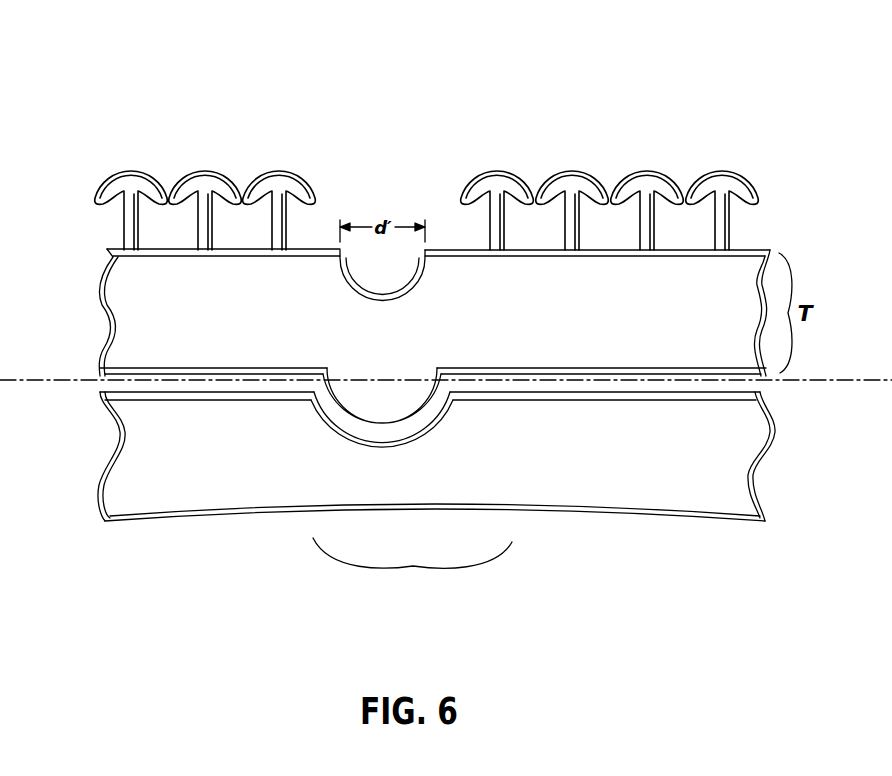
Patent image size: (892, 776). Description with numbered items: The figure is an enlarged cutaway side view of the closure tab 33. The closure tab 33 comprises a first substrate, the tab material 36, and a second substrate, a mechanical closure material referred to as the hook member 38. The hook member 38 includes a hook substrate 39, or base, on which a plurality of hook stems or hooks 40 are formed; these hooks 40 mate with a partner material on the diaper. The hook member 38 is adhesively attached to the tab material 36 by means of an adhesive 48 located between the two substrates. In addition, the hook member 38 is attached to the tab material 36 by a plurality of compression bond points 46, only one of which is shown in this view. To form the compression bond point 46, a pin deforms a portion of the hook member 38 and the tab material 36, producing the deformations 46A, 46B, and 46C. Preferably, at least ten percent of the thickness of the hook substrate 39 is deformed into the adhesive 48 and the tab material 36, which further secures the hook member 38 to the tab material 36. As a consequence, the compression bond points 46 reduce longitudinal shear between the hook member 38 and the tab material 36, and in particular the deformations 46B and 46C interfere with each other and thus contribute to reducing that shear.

The closure tab 33 is at (732, 100).
The hooks 40 is at (282, 172).
The hook member 38 is at (95, 173).
The hook substrate 39 is at (732, 278).
The deformation 46A is at (405, 278).
The adhesive 48 is at (743, 387).
The tab material 36 is at (740, 492).
The deformation 46B is at (383, 392).
The deformation 46C is at (413, 423).
The compression bond point 46 is at (412, 574).